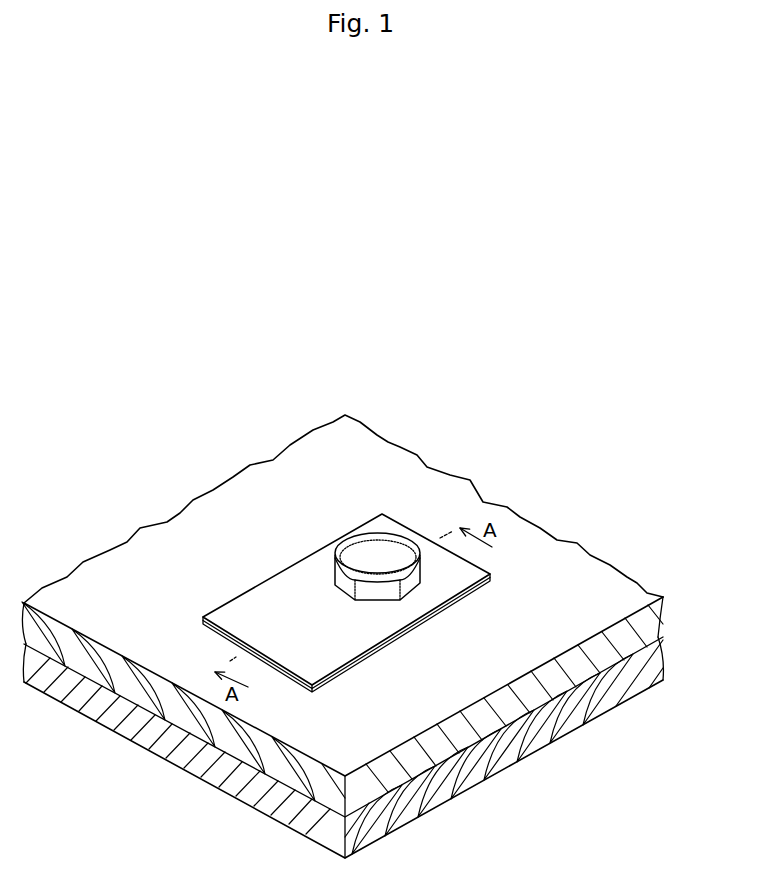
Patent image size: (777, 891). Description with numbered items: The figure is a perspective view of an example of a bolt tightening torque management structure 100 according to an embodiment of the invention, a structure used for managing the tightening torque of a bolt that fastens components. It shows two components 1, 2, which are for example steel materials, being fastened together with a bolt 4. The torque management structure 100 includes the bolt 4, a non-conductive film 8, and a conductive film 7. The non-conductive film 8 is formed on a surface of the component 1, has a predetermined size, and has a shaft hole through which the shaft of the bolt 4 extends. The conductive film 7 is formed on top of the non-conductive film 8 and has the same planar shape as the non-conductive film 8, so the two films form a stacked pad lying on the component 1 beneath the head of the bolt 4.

The torque management structure 100 is at (463, 413).
The component 1 is at (652, 622).
The component 2 is at (652, 667).
The conductive film 7 is at (262, 615).
The non-conductive film 8 is at (272, 665).
The bolt 4 is at (382, 553).